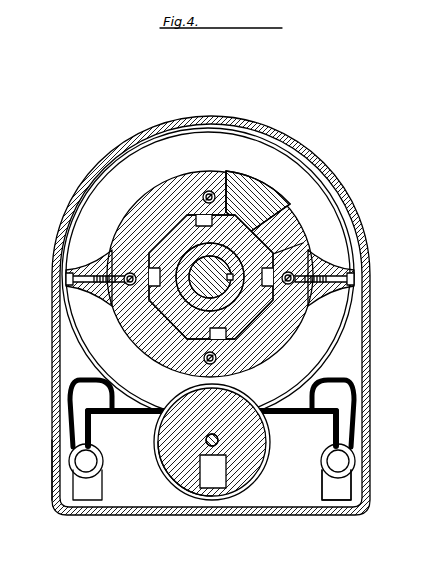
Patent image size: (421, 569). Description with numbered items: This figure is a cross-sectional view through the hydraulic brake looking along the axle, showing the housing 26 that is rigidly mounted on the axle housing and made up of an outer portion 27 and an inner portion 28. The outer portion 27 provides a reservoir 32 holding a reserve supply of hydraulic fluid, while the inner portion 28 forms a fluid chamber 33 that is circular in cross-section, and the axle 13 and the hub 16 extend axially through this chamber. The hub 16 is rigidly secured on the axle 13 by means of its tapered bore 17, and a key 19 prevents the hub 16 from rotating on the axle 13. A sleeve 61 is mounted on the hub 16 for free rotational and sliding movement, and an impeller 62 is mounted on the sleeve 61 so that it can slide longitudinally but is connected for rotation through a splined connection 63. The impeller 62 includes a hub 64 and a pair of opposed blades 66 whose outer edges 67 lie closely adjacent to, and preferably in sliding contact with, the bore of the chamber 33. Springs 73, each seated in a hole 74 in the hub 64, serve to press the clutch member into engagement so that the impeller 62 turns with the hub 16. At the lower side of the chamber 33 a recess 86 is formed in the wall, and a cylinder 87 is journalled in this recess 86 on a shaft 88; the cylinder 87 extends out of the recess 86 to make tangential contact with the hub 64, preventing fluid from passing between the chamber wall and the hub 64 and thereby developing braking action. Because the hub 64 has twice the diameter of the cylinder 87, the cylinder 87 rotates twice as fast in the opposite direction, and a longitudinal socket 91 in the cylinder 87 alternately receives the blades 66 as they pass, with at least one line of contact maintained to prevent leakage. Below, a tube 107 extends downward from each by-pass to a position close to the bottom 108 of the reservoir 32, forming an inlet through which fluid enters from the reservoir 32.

The axle 13 is at (266, 210).
The hub 16 is at (160, 237).
The bore 17 is at (233, 297).
The key 19 is at (304, 243).
The housing 26 is at (46, 295).
The outer portion 27 is at (56, 473).
The inner portion 28 is at (84, 346).
The reservoir 32 is at (130, 500).
The fluid chamber 33 is at (312, 187).
The sleeve 61 is at (184, 221).
The impeller 62 is at (243, 190).
The splined connection 63 is at (226, 172).
The hub 64 is at (306, 246).
The blades 66 is at (345, 297).
The outer edges 67 is at (66, 273).
The springs 73 is at (112, 301).
The hole 74 is at (118, 257).
The recess 86 is at (178, 493).
The cylinder 87 is at (250, 462).
The shaft 88 is at (219, 440).
The socket 91 is at (222, 486).
The tube 107 is at (343, 494).
The bottom 108 is at (307, 510).